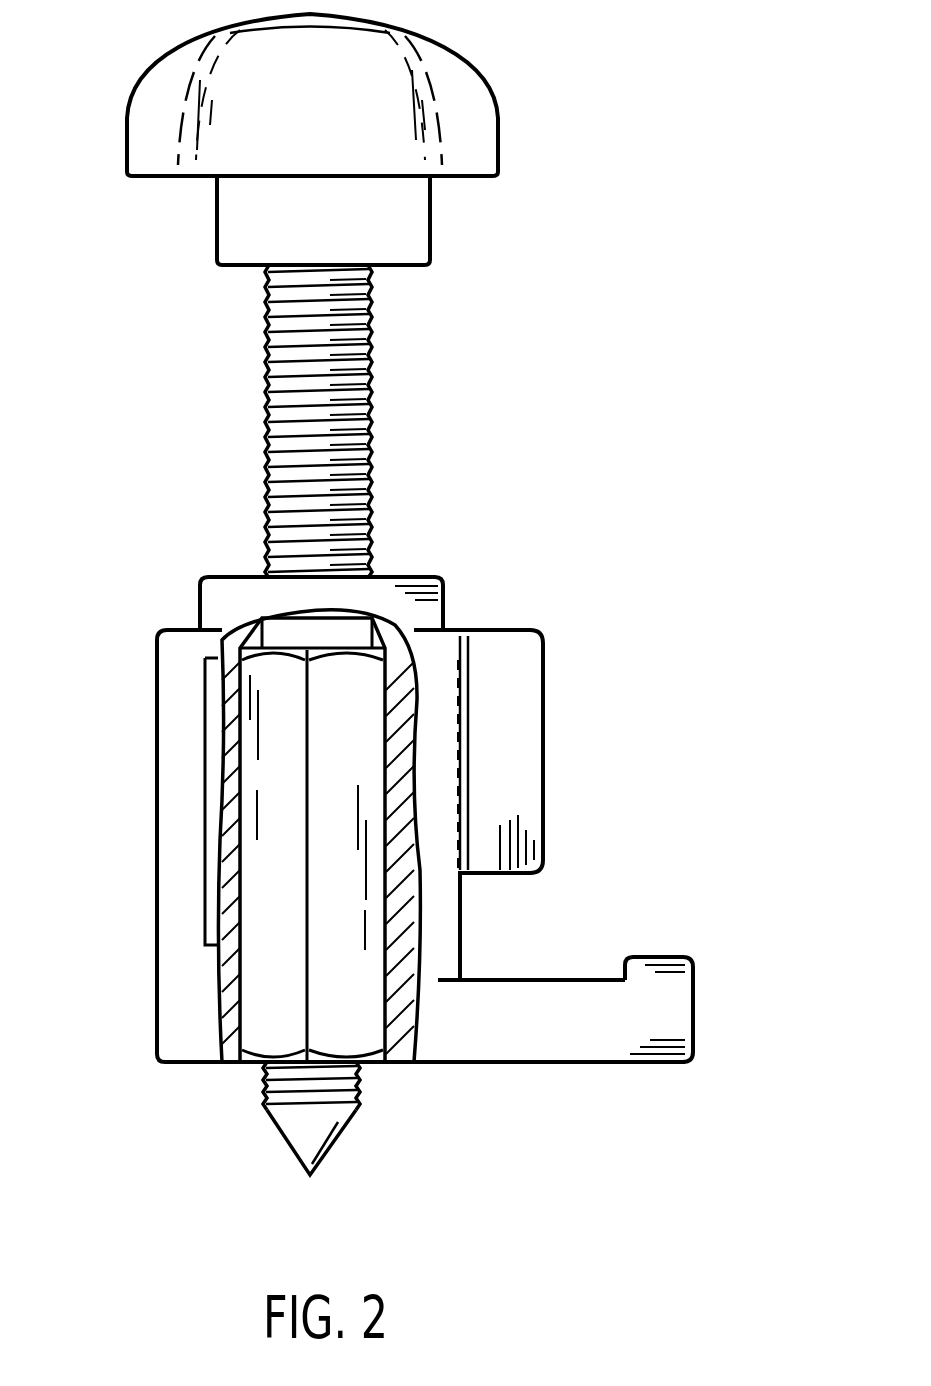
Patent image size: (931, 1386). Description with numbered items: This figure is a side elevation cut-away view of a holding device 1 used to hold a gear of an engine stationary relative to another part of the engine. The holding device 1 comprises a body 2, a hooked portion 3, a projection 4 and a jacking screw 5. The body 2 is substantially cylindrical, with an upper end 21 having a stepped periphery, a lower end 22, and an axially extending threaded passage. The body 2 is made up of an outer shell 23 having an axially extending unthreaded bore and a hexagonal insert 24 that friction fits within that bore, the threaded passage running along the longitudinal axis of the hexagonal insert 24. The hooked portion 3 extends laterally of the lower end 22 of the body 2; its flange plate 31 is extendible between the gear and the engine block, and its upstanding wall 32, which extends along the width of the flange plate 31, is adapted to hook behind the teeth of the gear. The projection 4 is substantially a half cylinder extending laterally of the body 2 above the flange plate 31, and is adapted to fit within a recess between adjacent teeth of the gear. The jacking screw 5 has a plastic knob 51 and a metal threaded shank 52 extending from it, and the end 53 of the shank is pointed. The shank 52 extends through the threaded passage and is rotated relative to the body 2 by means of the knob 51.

The holding device 1 is at (416, 622).
The body 2 is at (302, 819).
The upper end 21 is at (194, 607).
The lower end 22 is at (150, 1060).
The outer shell 23 is at (165, 750).
The hexagonal insert 24 is at (353, 692).
The hooked portion 3 is at (611, 1011).
The flange plate 31 is at (537, 1040).
The upstanding wall 32 is at (678, 957).
The projection 4 is at (548, 752).
The jacking screw 5 is at (378, 622).
The plastic knob 51 is at (497, 143).
The threaded shank 52 is at (372, 346).
The pointed end 53 is at (308, 1178).